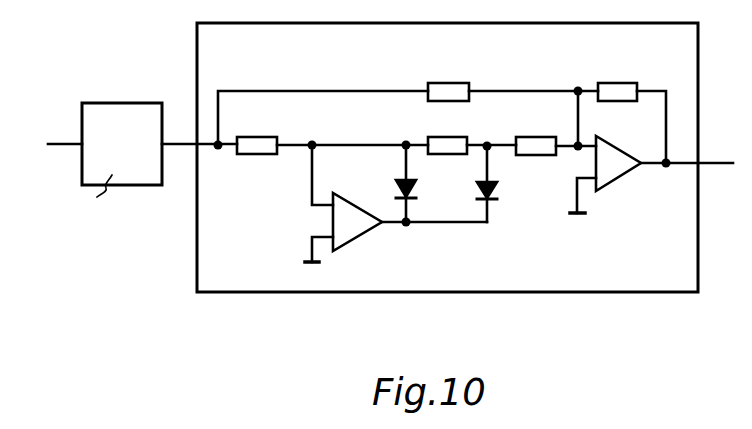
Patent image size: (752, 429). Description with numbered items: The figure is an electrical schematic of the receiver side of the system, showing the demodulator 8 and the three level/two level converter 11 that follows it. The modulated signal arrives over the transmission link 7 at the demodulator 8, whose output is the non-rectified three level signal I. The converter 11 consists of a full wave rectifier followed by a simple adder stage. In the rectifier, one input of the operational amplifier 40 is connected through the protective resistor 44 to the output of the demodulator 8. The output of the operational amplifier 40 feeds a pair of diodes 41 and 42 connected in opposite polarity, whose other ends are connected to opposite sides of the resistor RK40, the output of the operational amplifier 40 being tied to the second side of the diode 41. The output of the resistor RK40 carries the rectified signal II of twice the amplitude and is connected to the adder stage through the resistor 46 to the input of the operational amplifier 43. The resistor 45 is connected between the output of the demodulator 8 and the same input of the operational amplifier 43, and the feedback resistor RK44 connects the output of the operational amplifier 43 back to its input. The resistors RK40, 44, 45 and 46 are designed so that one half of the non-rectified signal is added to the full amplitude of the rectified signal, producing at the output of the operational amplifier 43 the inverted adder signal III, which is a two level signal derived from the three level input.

The transmission link 7 is at (70, 146).
The demodulator 8 is at (135, 115).
The three level/two level converter 11 is at (641, 280).
The operational amplifier 40 is at (355, 228).
The diode 41 is at (398, 190).
The diode 42 is at (496, 189).
The operational amplifier 43 is at (614, 168).
The resistor 44 is at (268, 143).
The resistor 45 is at (448, 92).
The resistor 46 is at (534, 146).
The resistor RK40 is at (448, 144).
The feedback resistor RK44 is at (616, 93).
The non-rectified signal I is at (202, 147).
The rectified signal II is at (497, 143).
The inverted adder signal III is at (680, 160).